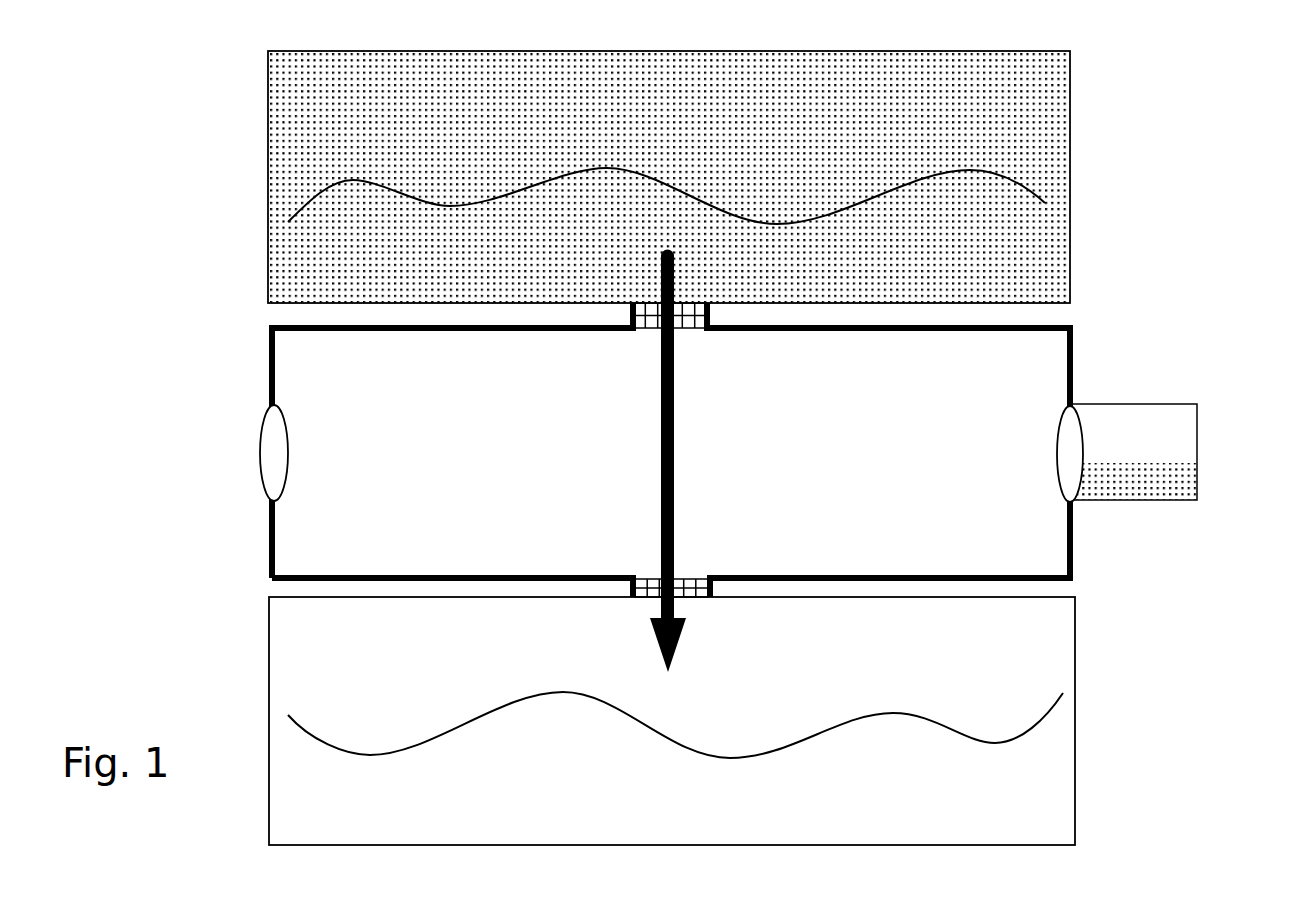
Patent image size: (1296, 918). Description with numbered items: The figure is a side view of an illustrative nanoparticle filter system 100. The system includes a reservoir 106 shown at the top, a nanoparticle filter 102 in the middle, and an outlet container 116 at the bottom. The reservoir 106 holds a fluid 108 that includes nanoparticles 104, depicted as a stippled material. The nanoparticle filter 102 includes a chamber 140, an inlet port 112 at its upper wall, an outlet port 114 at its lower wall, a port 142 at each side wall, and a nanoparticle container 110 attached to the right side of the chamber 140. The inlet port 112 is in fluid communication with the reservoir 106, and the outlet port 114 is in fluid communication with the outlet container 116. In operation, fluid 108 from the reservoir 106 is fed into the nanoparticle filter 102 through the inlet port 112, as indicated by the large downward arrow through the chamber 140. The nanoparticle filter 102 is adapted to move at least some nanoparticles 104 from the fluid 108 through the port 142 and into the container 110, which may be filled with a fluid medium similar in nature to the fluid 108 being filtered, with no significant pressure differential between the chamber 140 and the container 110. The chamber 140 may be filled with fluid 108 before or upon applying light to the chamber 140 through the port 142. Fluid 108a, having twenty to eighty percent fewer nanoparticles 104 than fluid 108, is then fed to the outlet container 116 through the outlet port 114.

The nanoparticle filter system 100 is at (1292, 292).
The nanoparticle filter 102 is at (1129, 361).
The nanoparticles 104 is at (1013, 115).
The reservoir 106 is at (1076, 144).
The fluid 108 is at (1040, 188).
The fluid having fewer nanoparticles 108a is at (1052, 718).
The nanoparticle container 110 is at (1115, 433).
The inlet port 112 is at (707, 316).
The outlet port 114 is at (710, 585).
The outlet container 116 is at (1078, 796).
The chamber 140 is at (1078, 354).
The port 142 is at (254, 456).